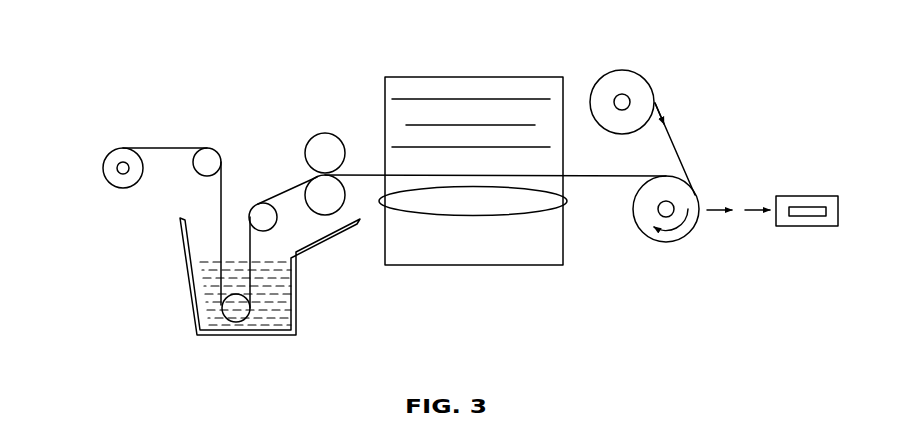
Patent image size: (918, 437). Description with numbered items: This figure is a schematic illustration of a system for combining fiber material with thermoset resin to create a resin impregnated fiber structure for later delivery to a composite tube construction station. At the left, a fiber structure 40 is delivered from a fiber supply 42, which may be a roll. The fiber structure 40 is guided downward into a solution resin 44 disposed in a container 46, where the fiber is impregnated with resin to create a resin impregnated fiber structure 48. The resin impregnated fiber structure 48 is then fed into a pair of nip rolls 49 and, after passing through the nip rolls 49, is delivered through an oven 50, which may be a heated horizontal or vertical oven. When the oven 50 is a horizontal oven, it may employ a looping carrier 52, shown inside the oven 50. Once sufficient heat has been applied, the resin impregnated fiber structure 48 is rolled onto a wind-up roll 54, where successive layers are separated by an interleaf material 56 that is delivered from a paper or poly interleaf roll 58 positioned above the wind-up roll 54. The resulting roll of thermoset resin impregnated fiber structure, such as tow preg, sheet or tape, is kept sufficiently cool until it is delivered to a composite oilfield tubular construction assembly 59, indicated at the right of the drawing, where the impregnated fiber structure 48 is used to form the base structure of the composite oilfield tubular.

The fiber structure 40 is at (100, 139).
The fiber supply 42 is at (103, 168).
The solution resin 44 is at (193, 282).
The container 46 is at (297, 293).
The resin impregnated fiber structure 48 is at (292, 188).
The nip rolls 49 is at (320, 134).
The oven 50 is at (483, 77).
The looping carrier 52 is at (473, 217).
The wind-up roll 54 is at (670, 242).
The interleaf material 56 is at (673, 140).
The interleaf roll 58 is at (622, 70).
The composite oilfield tubular construction assembly 59 is at (807, 196).